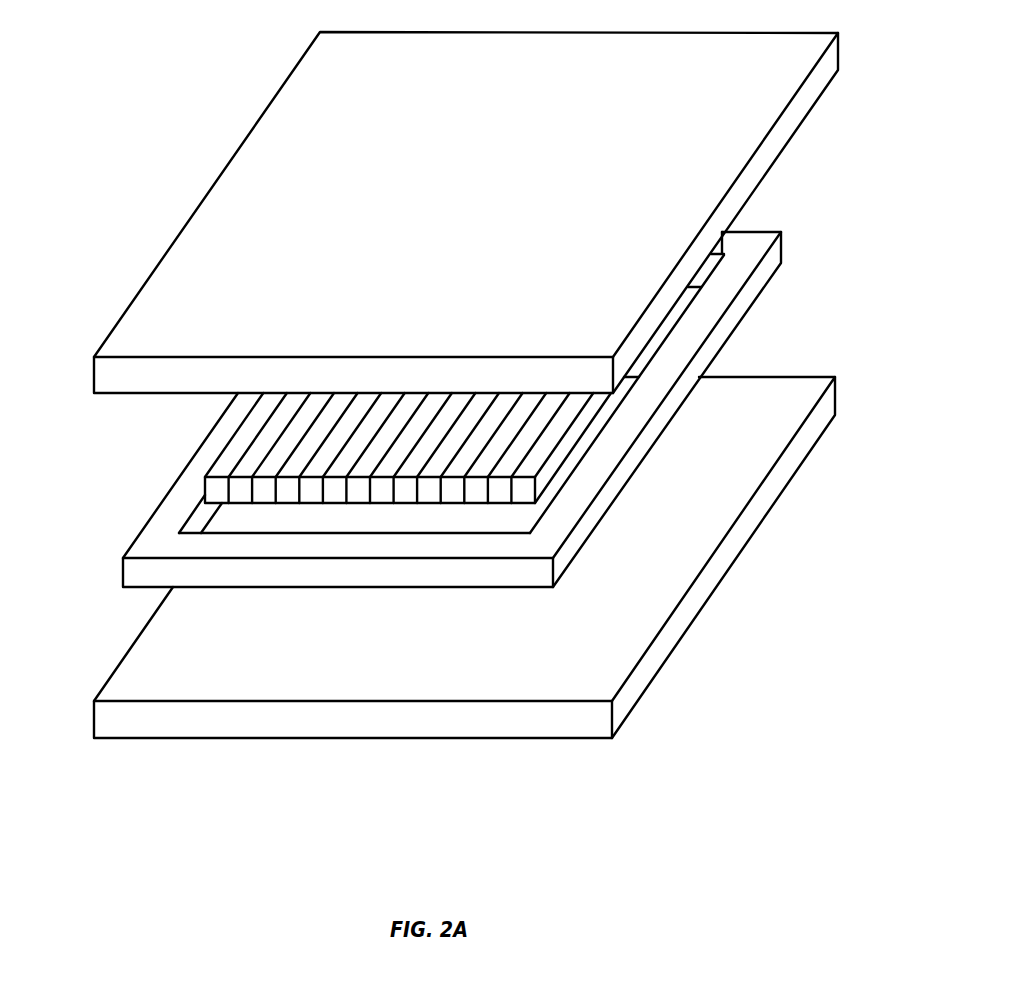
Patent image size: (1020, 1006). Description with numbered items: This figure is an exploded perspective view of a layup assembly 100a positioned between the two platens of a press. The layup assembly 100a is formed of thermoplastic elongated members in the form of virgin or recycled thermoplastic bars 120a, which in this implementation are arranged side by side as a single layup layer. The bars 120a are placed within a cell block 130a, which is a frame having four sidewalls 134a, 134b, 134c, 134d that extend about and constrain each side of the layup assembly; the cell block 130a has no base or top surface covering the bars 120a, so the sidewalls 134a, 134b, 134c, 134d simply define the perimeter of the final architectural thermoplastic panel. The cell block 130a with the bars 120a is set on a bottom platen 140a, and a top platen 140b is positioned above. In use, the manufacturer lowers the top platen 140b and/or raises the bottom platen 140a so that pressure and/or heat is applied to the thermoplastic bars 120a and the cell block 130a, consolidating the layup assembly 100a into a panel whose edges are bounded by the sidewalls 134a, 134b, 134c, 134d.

The layup assembly 100a is at (549, 447).
The thermoplastic bars 120a is at (225, 470).
The cell block 130a is at (592, 483).
The sidewall 134a is at (657, 542).
The sidewall 134b is at (177, 513).
The sidewall 134c is at (277, 647).
The sidewall 134d is at (735, 218).
The bottom platen 140a is at (485, 725).
The top platen 140b is at (510, 122).